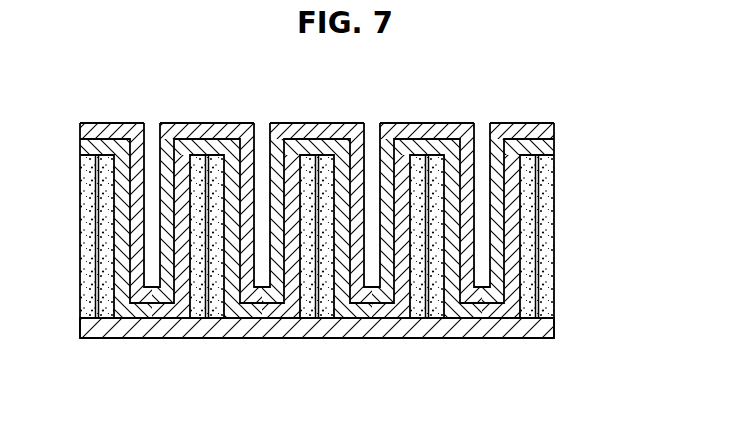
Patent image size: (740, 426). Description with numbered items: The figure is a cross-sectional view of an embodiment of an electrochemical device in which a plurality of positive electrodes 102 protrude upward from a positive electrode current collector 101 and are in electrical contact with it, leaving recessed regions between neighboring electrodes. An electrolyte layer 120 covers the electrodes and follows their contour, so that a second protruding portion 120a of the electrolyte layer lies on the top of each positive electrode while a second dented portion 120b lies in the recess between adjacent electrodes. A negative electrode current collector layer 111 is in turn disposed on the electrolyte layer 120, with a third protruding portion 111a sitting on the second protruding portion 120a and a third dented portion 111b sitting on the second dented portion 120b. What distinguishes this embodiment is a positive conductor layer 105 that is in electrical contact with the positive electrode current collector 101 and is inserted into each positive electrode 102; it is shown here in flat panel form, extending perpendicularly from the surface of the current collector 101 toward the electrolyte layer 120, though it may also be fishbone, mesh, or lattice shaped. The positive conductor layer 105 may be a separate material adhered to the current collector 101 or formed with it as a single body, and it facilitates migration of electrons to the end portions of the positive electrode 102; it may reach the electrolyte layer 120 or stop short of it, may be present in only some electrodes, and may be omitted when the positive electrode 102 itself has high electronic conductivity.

The positive electrode current collector 101 is at (548, 326).
The positive electrodes 102 is at (550, 233).
The positive conductor layer 105 is at (207, 319).
The negative electrode current collector layer 111 is at (347, 228).
The third protruding portion 111a is at (445, 133).
The third dented portion 111b is at (487, 298).
The electrolyte layer 120 is at (347, 228).
The second protruding portion 120a is at (422, 147).
The second dented portion 120b is at (475, 308).